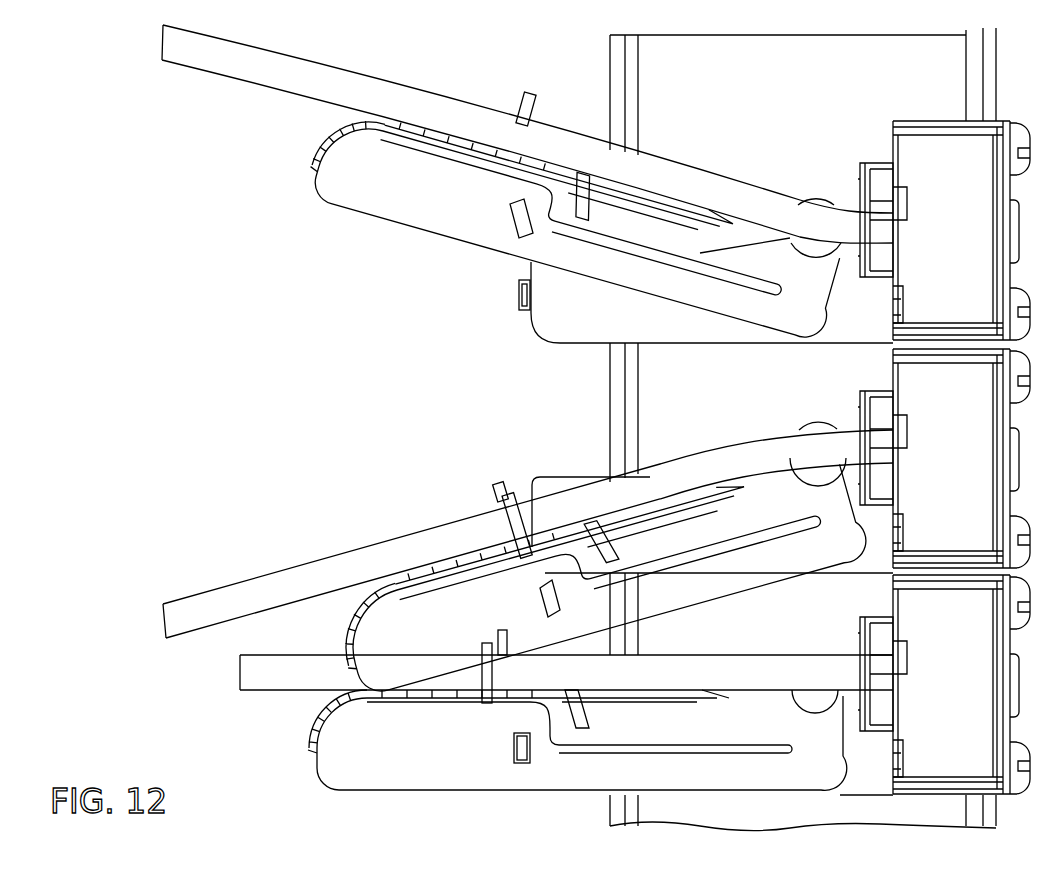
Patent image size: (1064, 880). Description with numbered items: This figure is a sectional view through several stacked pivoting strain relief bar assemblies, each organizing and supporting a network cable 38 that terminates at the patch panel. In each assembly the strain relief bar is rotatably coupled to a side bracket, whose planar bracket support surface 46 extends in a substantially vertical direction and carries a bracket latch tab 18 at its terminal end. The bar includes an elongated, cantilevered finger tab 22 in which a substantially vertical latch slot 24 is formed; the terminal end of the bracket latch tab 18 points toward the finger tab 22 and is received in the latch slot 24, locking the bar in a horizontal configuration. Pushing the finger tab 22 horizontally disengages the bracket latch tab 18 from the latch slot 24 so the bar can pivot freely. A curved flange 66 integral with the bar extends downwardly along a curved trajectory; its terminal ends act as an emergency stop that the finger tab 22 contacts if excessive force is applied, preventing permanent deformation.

The bracket latch tab 18 is at (518, 298).
The finger tab 22 is at (363, 185).
The latch slot 24 is at (505, 213).
The network cable 38 is at (302, 70).
The bracket support surface 46 is at (580, 307).
The curved flange 66 is at (330, 140).